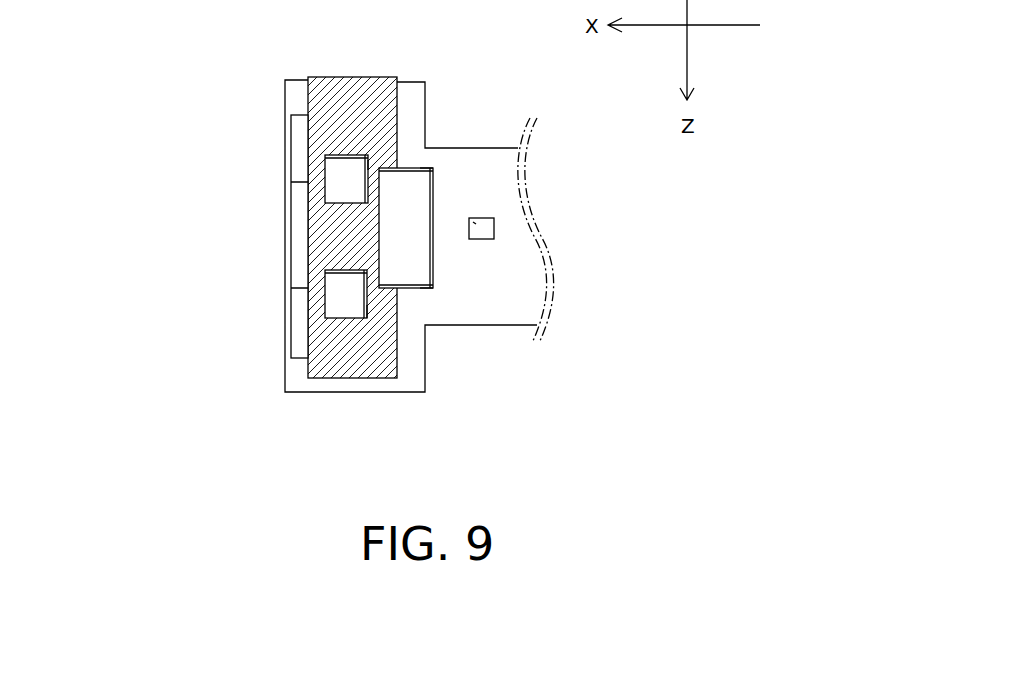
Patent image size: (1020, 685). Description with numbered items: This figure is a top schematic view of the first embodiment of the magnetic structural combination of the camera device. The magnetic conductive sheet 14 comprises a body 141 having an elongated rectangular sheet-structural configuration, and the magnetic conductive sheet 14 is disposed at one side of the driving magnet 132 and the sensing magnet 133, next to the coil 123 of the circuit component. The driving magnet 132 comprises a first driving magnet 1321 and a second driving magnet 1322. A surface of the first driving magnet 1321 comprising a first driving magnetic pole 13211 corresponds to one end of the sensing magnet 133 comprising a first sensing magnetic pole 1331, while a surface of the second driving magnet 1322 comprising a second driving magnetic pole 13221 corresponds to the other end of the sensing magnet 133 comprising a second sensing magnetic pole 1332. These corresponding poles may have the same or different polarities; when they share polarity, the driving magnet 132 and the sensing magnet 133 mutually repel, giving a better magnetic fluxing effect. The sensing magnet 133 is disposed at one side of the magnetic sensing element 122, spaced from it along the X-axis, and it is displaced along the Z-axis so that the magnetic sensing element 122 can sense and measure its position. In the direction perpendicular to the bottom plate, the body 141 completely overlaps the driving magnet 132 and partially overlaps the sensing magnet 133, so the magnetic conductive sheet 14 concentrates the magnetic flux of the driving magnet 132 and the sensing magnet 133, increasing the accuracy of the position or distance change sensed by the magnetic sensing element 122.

The magnetic conductive sheet 14 is at (358, 389).
The body 141 is at (328, 365).
The coil 123 is at (300, 342).
The driving magnet 132 is at (208, 276).
The second driving magnet 1322 is at (343, 181).
The second driving magnetic pole 13221 is at (372, 158).
The first driving magnet 1321 is at (348, 297).
The first driving magnetic pole 13211 is at (373, 311).
The sensing magnet 133 is at (418, 243).
The second sensing magnetic pole 1332 is at (421, 167).
The first sensing magnetic pole 1331 is at (422, 292).
The magnetic sensing element 122 is at (483, 230).